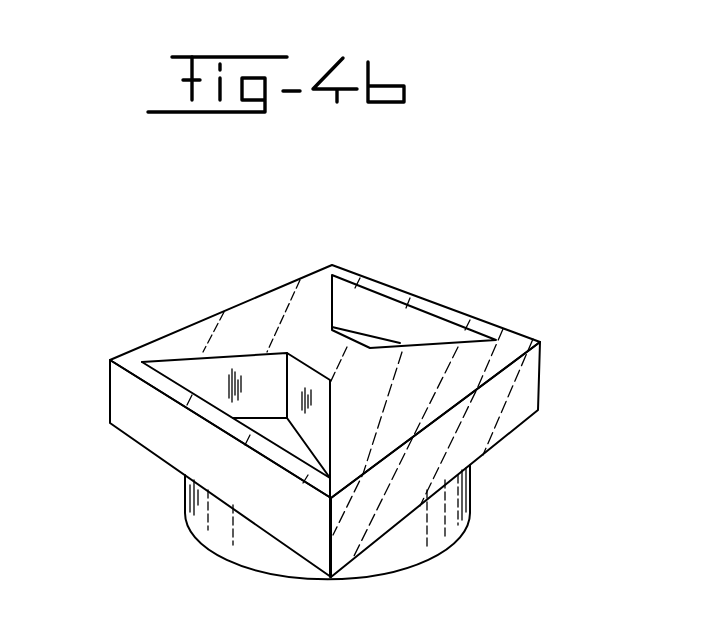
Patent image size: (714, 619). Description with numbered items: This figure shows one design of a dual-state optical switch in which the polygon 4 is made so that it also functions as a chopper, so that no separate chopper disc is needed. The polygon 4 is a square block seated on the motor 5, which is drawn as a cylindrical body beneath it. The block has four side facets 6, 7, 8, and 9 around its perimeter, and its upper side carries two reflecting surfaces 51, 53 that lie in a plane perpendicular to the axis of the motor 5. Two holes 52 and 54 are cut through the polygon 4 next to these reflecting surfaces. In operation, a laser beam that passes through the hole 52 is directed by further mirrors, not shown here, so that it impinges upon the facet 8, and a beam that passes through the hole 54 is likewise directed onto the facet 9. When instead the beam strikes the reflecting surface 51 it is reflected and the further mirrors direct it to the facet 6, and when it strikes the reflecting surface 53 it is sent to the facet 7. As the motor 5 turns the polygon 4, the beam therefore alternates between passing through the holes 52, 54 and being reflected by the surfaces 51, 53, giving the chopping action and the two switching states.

The polygon 4 is at (261, 262).
The motor 5 is at (198, 507).
The facet 6 is at (227, 310).
The facet 7 is at (505, 408).
The facet 8 is at (167, 443).
The facet 9 is at (484, 322).
The reflecting surface 51 is at (211, 327).
The hole 52 is at (257, 399).
The reflecting surface 53 is at (388, 408).
The hole 54 is at (385, 312).